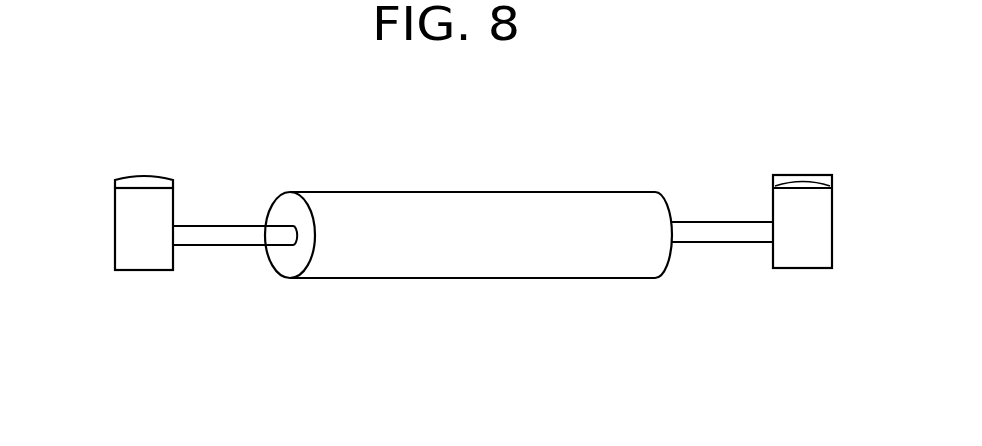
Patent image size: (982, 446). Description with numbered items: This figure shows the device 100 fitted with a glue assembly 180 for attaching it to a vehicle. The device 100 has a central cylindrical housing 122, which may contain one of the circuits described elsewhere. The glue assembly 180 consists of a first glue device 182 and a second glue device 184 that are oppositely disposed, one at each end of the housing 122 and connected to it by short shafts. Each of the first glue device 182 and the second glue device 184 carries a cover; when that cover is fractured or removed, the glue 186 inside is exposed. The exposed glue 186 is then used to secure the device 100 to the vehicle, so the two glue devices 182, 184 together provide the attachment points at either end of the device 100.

The device 100 is at (431, 274).
The housing 122 is at (407, 218).
The glue assembly 180 is at (163, 246).
The first glue device 182 is at (140, 245).
The second glue device 184 is at (803, 222).
The glue 186 is at (141, 183).